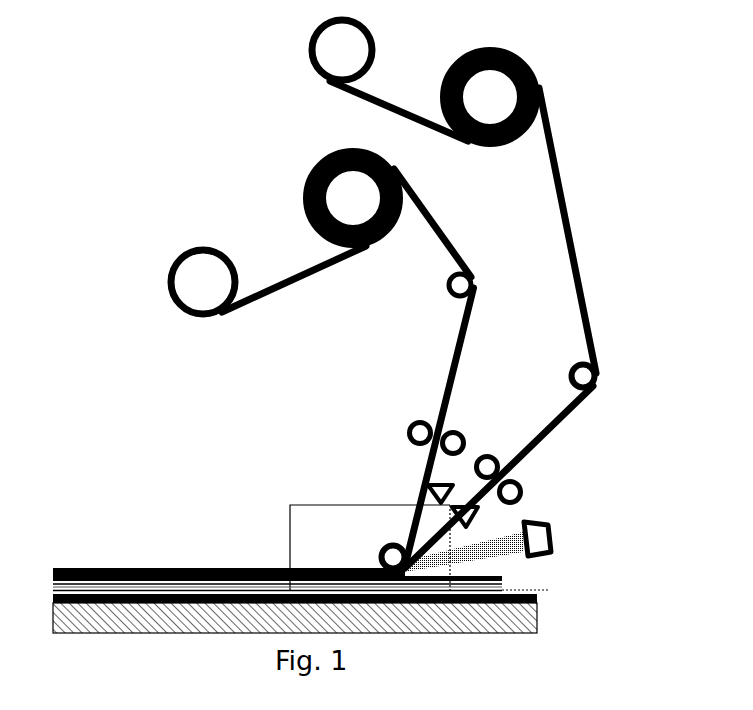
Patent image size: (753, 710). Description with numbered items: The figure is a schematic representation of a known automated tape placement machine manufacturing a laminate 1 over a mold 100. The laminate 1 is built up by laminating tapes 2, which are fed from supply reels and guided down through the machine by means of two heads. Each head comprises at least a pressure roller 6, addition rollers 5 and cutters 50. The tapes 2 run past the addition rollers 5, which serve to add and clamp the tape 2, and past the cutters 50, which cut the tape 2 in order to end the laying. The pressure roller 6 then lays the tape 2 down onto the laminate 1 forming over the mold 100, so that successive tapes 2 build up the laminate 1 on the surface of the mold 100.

The laminate 1 is at (508, 584).
The tape 2 is at (582, 272).
The addition rollers 5 is at (424, 430).
The pressure roller 6 is at (390, 555).
The cutters 50 is at (454, 488).
The mold 100 is at (517, 620).